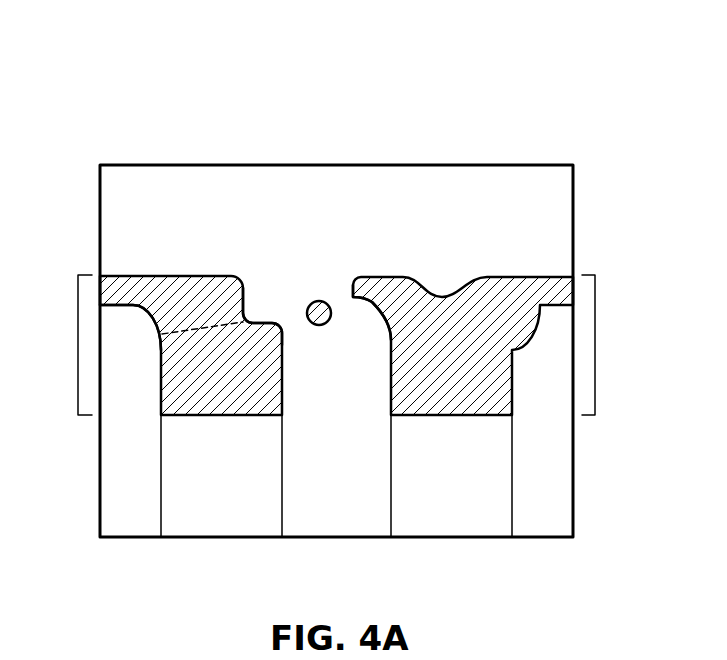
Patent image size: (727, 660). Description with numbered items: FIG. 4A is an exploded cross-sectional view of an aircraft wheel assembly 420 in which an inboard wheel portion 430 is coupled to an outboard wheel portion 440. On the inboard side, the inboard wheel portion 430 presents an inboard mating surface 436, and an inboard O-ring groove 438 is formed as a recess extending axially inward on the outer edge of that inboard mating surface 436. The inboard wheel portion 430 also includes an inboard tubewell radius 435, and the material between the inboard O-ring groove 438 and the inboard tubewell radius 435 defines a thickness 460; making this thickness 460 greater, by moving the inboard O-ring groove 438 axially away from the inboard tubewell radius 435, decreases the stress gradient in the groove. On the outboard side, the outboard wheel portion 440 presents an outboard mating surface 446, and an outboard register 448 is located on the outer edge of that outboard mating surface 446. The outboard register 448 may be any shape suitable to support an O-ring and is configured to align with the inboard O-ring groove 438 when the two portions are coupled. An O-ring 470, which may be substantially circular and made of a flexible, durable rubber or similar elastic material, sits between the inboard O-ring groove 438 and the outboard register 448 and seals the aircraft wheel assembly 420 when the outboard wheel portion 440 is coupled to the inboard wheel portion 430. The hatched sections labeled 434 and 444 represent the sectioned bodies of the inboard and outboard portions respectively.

The aircraft wheel assembly 420 is at (108, 112).
The inboard wheel portion 430 is at (78, 360).
The first seal body 434 is at (205, 288).
The inboard tubewell radius 435 is at (134, 306).
The inboard mating surface 436 is at (282, 507).
The inboard O-ring groove 438 is at (319, 301).
The outboard wheel portion 440 is at (595, 360).
The second seal body 444 is at (445, 303).
The outboard mating surface 446 is at (391, 507).
The outboard register 448 is at (372, 307).
The thickness 460 is at (170, 343).
The O-ring 470 is at (250, 340).